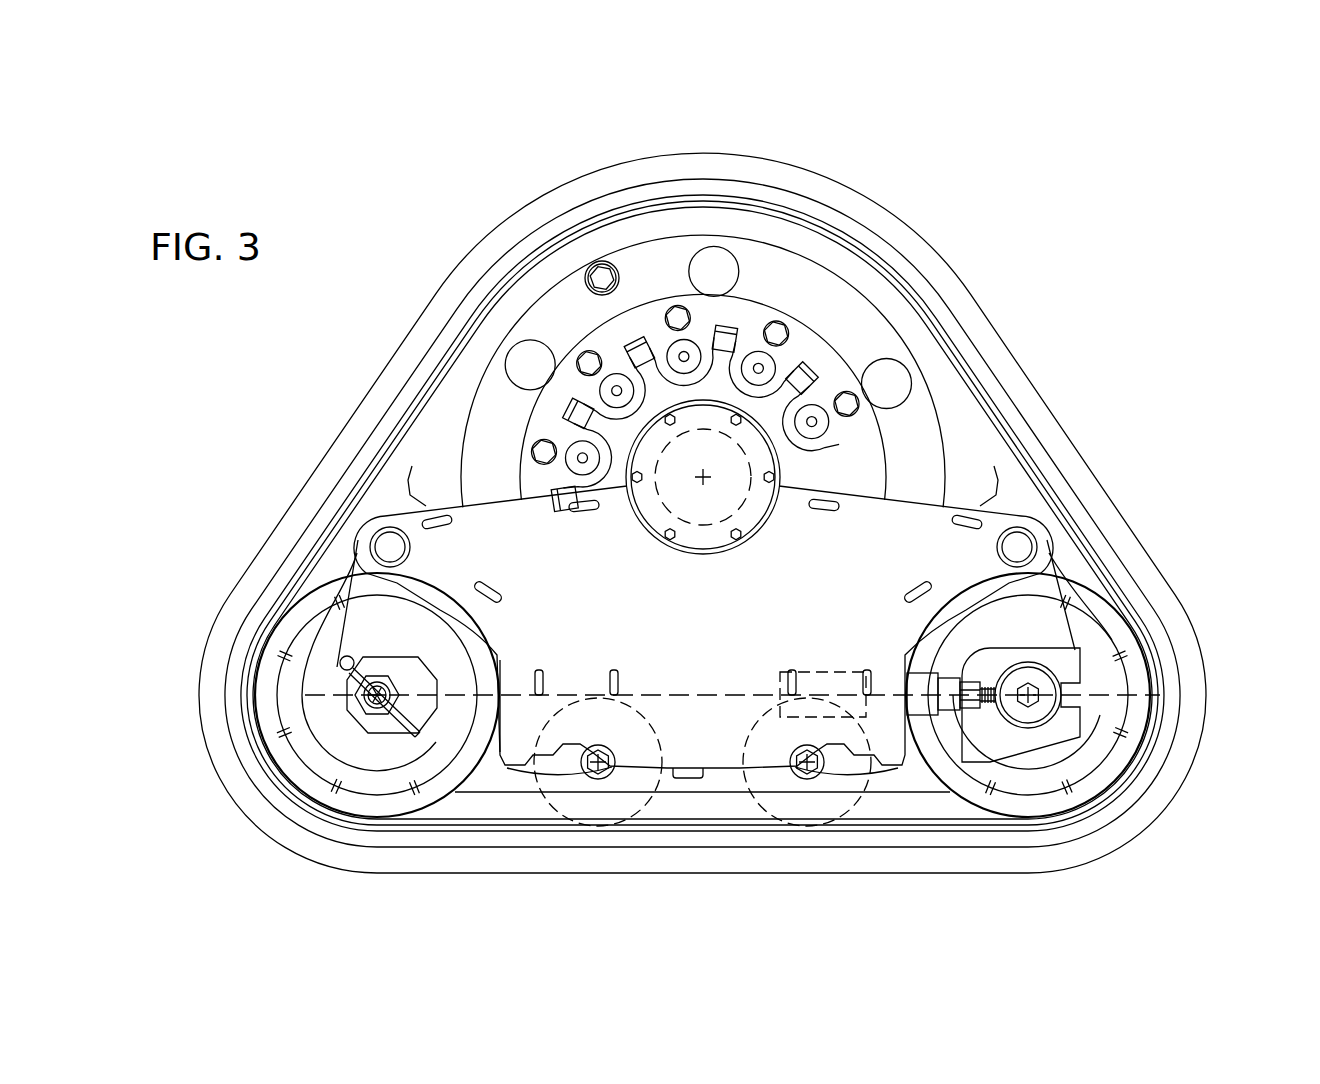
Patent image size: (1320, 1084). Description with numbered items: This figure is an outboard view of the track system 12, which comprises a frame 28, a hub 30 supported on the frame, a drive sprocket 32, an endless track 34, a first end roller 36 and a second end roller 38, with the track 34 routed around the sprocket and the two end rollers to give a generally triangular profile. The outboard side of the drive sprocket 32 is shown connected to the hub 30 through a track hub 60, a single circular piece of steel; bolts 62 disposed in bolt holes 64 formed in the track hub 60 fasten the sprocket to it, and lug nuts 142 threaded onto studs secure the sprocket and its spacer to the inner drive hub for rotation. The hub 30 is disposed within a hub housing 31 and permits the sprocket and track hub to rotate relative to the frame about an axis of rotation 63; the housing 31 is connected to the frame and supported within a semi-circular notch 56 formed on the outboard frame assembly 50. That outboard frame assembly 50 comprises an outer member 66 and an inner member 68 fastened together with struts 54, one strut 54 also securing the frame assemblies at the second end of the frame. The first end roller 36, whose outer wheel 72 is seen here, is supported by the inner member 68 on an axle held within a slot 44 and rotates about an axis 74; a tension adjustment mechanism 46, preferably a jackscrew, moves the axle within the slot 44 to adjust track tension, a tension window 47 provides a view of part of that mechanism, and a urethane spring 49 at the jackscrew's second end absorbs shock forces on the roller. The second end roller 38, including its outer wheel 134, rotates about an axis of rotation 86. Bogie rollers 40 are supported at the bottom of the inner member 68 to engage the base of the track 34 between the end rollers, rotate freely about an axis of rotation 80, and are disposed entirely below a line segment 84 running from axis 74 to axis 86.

The track system 12 is at (365, 140).
The frame 28 is at (701, 790).
The hub 30 is at (550, 370).
The hub housing 31 is at (655, 447).
The drive sprocket 32 is at (419, 502).
The endless track 34 is at (1017, 353).
The first end roller 36 is at (1112, 582).
The second end roller 38 is at (240, 654).
The bogie rollers 40 is at (635, 815).
The slot 44 is at (1067, 683).
The tension adjustment mechanism 46 is at (930, 717).
The tension window 47 is at (882, 707).
The urethane spring 49 is at (825, 718).
The outboard frame assembly 50 is at (387, 513).
The struts 54 is at (372, 540).
The semi-circular notch 56 is at (665, 450).
The track hub 60 is at (593, 338).
The bolts 62 is at (777, 322).
The axis of rotation 63 is at (708, 477).
The bolt holes 64 is at (665, 316).
The outer member 66 is at (430, 603).
The inner member 68 is at (340, 637).
The outer wheel 72 is at (1155, 700).
The axis 74 is at (1035, 700).
The axis of rotation 80 is at (588, 775).
The line segment 84 is at (497, 698).
The axis of rotation 86 is at (365, 702).
The outer wheel 134 is at (412, 736).
The lug nuts 142 is at (590, 276).